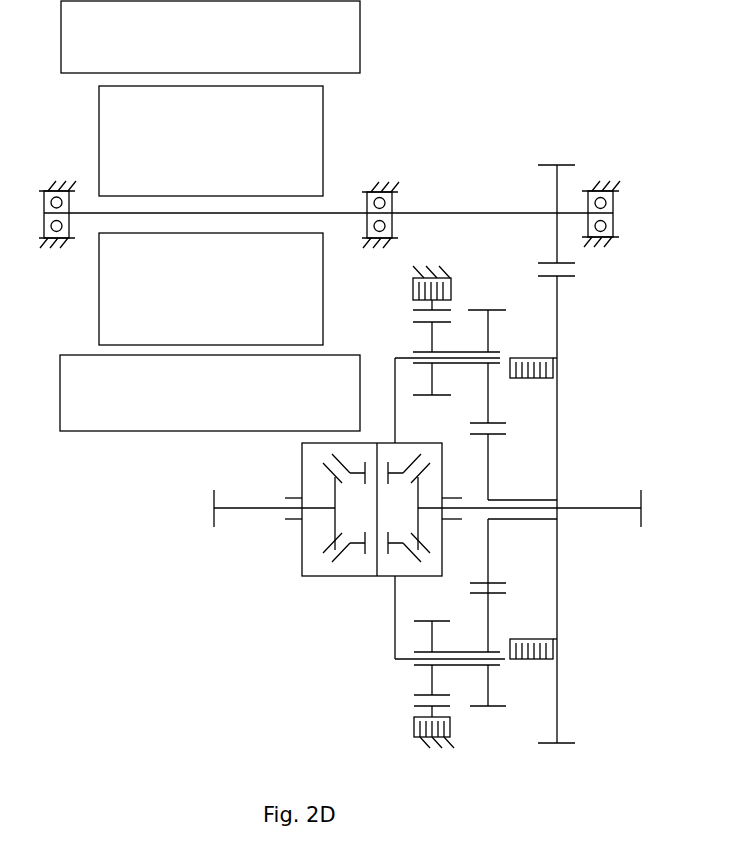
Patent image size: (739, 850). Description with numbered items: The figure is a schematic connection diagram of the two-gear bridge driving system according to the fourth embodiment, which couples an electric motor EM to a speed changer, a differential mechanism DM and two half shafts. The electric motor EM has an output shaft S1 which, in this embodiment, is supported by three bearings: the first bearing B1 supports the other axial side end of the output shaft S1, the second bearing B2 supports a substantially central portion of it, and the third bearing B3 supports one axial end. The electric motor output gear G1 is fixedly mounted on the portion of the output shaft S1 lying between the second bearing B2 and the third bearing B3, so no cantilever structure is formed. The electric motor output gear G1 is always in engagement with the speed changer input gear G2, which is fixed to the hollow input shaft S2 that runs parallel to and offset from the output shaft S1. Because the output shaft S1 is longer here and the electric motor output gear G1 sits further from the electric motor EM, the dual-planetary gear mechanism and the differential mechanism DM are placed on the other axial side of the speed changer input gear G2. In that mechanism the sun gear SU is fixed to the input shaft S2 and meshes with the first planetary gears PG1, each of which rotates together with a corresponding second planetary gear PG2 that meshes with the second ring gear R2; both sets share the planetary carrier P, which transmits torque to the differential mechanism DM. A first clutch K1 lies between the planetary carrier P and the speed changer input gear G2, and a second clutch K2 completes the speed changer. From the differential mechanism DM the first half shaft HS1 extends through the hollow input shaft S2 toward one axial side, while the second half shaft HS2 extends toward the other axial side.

The electric motor EM is at (210, 216).
The output shaft S1 is at (328, 203).
The input shaft S2 is at (531, 500).
The first bearing B1 is at (47, 209).
The second bearing B2 is at (371, 210).
The third bearing B3 is at (614, 206).
The electric motor output gear G1 is at (549, 214).
The speed changer input gear G2 is at (562, 318).
The first clutch K1 is at (552, 366).
The second clutch K2 is at (413, 283).
The second ring gear R2 is at (412, 310).
The first planetary gear PG1 is at (500, 366).
The second planetary gear PG2 is at (443, 358).
The planetary carrier P is at (442, 508).
The sun gear SU is at (480, 467).
The first half shaft HS1 is at (529, 506).
The second half shaft HS2 is at (274, 506).
The differential mechanism DM is at (372, 509).